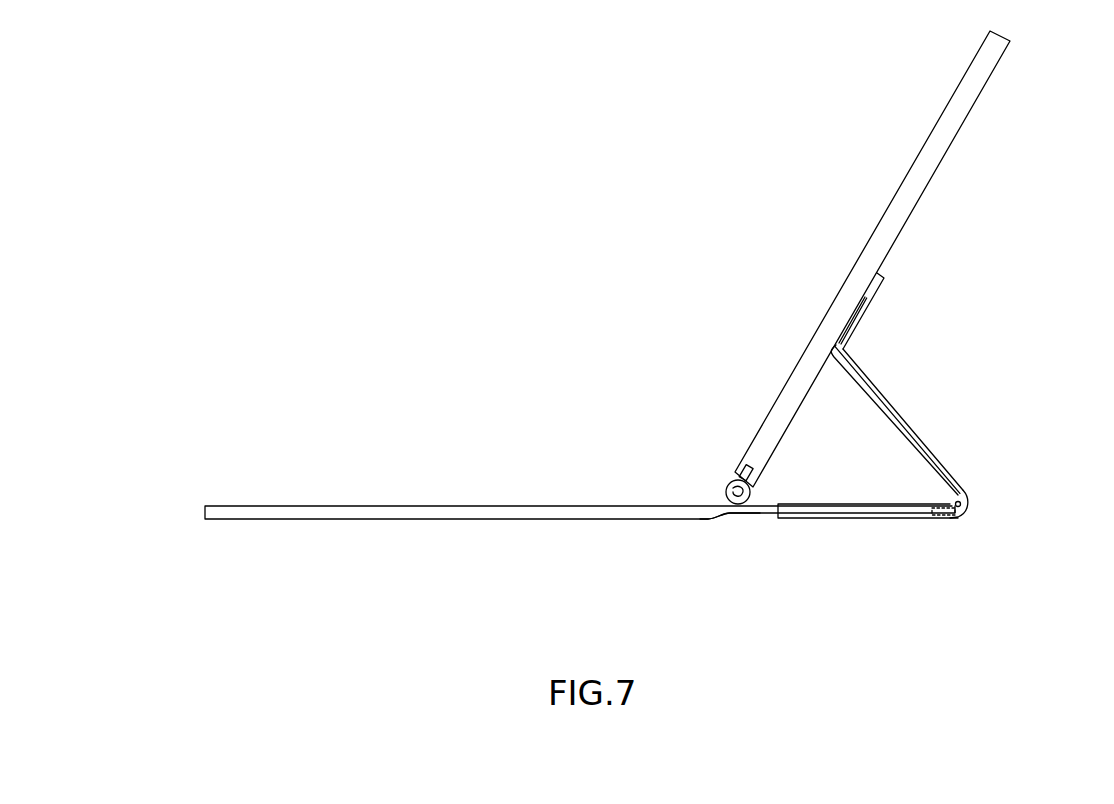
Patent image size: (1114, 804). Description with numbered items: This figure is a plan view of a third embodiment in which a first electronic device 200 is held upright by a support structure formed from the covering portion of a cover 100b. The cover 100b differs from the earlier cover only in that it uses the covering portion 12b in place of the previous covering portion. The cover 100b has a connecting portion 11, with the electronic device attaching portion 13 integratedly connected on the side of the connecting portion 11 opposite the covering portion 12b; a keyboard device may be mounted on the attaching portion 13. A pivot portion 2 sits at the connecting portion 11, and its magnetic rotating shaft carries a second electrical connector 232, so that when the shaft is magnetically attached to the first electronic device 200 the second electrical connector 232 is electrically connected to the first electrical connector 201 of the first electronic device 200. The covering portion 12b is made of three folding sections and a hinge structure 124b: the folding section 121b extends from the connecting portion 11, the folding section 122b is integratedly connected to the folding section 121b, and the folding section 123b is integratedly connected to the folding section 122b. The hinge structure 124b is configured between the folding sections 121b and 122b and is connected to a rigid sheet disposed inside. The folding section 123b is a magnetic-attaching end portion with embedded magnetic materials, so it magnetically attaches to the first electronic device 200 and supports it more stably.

The cover 100b is at (580, 497).
The electronic device attaching portion 13 is at (317, 512).
The connecting portion 11 is at (735, 535).
The pivot portion 2 is at (684, 480).
The second electrical connector 232 is at (738, 492).
The first electronic device 200 is at (853, 259).
The first electrical connector 201 is at (737, 476).
The covering portion 12b is at (942, 448).
The folding section 123b is at (885, 330).
The folding section 122b is at (948, 430).
The hinge structure 124b is at (966, 500).
The folding section 121b is at (870, 542).